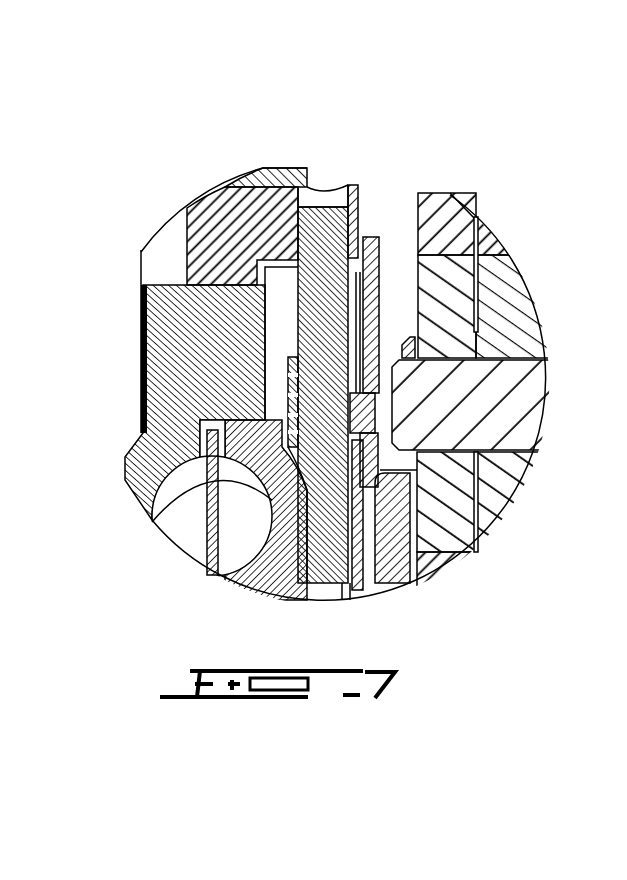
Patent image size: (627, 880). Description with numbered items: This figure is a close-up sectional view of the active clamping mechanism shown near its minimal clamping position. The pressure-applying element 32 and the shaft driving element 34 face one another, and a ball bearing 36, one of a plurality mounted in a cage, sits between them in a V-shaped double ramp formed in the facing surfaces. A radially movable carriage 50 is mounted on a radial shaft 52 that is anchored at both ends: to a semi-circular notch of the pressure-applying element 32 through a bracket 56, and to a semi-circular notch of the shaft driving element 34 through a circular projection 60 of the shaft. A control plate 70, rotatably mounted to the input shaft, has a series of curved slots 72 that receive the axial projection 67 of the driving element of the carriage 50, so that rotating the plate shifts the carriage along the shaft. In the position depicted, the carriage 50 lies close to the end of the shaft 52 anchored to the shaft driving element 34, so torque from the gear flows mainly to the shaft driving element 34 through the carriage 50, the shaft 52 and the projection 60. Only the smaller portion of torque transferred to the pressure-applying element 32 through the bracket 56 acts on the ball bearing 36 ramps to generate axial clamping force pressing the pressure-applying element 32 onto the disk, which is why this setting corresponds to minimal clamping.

The pressure-applying element 32 is at (163, 312).
The shaft driving element 34 is at (278, 557).
The ball bearing 36 is at (183, 522).
The radially movable carriage 50 is at (286, 392).
The radial shaft 52 is at (333, 207).
The bracket 56 is at (221, 231).
The circular projection 60 is at (337, 543).
The axial projection 67 is at (362, 410).
The control plate 70 is at (377, 277).
The curved slot 72 is at (376, 424).